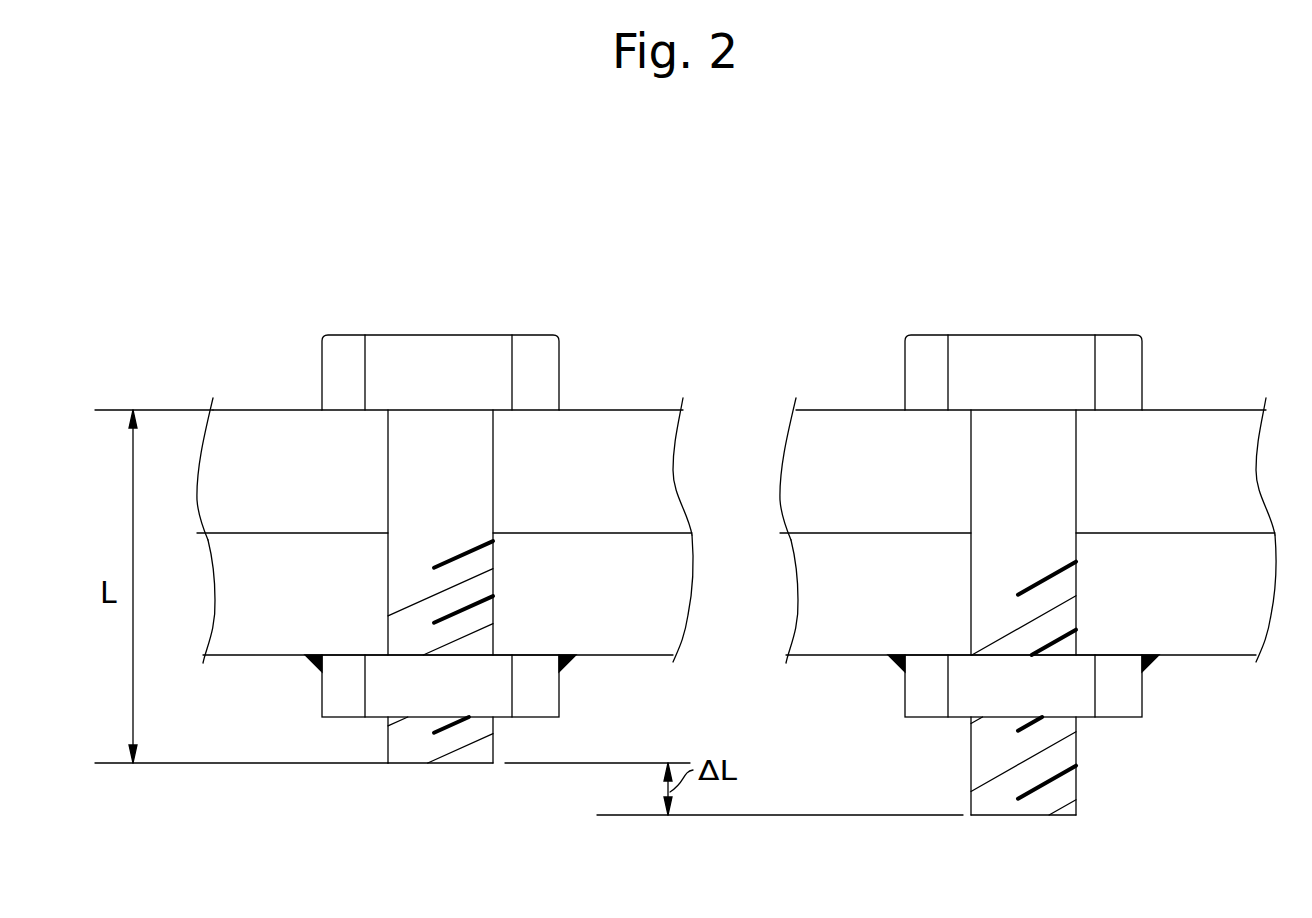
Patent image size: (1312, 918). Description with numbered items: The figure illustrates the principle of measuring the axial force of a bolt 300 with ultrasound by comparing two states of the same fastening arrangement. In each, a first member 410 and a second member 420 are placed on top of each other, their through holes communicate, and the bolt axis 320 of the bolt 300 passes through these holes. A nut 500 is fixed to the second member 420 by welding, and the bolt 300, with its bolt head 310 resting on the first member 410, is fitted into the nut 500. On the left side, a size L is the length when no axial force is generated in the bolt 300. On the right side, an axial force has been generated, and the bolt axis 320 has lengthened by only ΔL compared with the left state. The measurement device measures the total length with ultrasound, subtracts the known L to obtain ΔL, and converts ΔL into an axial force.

The bolt 300 is at (739, 353).
The bolt head 310 is at (445, 333).
The bolt axis 320 is at (480, 470).
The first member 410 is at (251, 418).
The second member 420 is at (267, 648).
The nut 500 is at (328, 695).